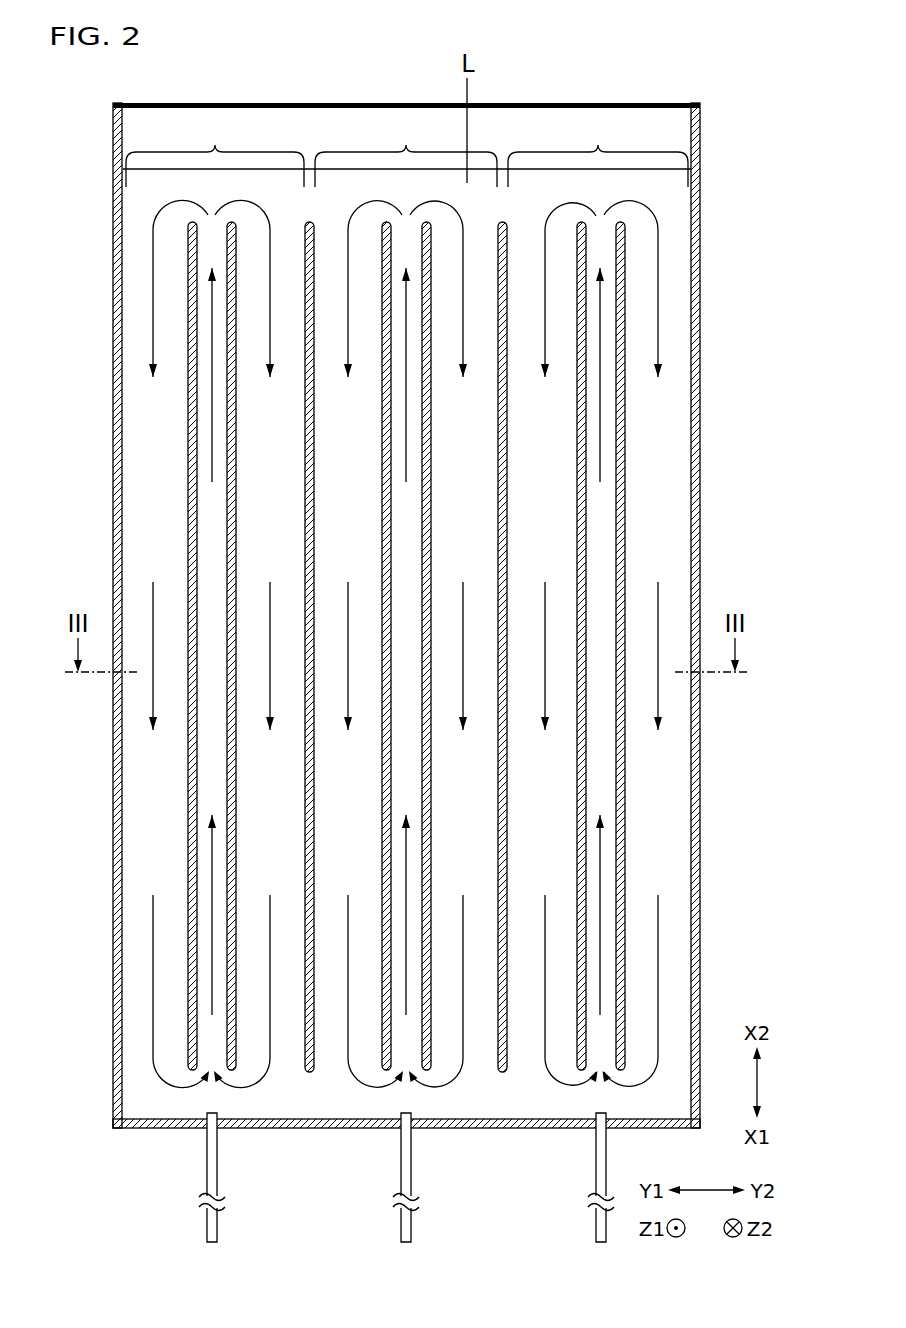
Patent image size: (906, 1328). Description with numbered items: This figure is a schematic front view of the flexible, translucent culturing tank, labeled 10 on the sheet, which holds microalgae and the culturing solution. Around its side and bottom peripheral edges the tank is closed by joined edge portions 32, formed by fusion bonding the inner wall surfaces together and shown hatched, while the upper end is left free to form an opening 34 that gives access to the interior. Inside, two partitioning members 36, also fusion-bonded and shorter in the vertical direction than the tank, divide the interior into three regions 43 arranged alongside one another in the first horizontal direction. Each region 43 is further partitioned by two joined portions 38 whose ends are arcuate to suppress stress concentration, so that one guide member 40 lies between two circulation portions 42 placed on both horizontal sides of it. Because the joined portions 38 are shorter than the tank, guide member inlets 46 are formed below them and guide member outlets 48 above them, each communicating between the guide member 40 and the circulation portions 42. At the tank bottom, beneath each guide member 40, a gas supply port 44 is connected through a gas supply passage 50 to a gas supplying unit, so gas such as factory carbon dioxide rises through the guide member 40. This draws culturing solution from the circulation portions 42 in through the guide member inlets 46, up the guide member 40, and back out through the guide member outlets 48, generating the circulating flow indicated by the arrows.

The cooling device (battery pack) 10 is at (683, 34).
The joined edge portions 32 is at (113, 266).
The opening 34 is at (585, 103).
The partitioning members 36 is at (305, 438).
The joined portions 38 is at (190, 332).
The guide members 40 is at (212, 531).
The circulation portions 42 is at (275, 492).
The regions 43 is at (407, 154).
The gas supply ports 44 is at (212, 1122).
The guide member inlets 46 is at (233, 1098).
The guide member outlets 48 is at (232, 212).
The gas supply passages 50 is at (218, 1226).